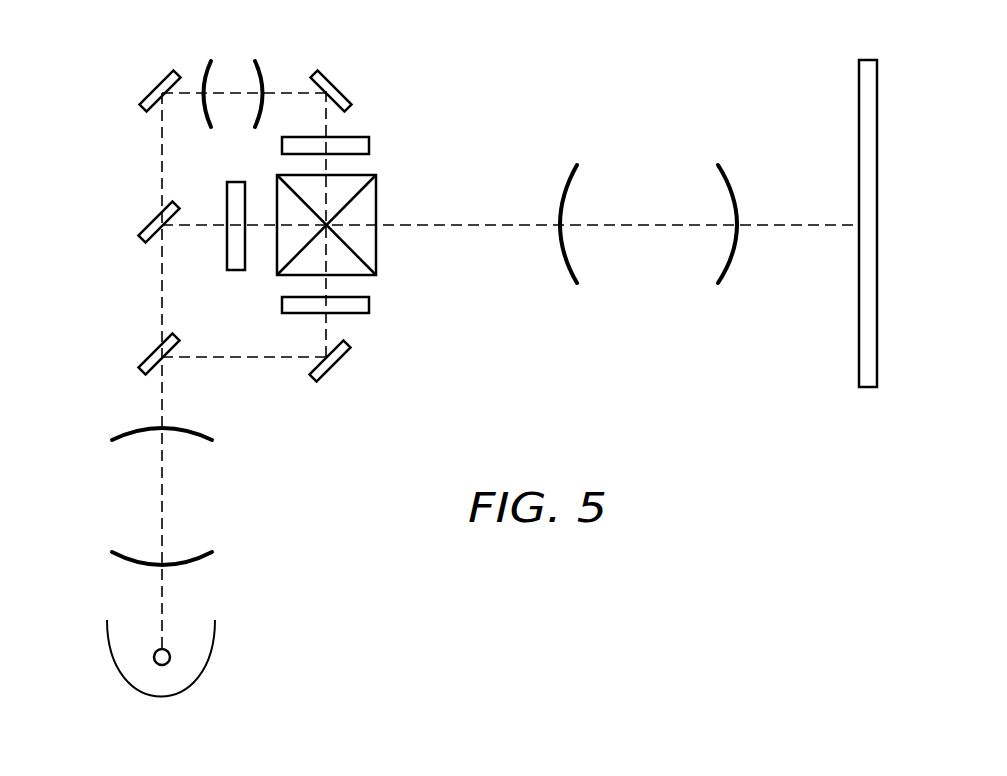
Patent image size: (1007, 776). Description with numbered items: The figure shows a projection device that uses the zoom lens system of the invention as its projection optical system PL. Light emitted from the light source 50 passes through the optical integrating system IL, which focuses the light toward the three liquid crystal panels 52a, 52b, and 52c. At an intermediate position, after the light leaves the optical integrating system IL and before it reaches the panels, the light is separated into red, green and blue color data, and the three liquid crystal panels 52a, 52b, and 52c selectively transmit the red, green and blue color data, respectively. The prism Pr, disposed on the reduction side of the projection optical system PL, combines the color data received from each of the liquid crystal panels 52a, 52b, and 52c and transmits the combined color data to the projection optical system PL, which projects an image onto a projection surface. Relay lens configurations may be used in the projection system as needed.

The light source 50 is at (156, 650).
The liquid crystal panel 52a is at (370, 305).
The liquid crystal panel 52b is at (237, 271).
The liquid crystal panel 52c is at (370, 145).
The prism Pr is at (377, 246).
The projection optical system PL is at (648, 158).
The optical integrating system IL is at (108, 503).